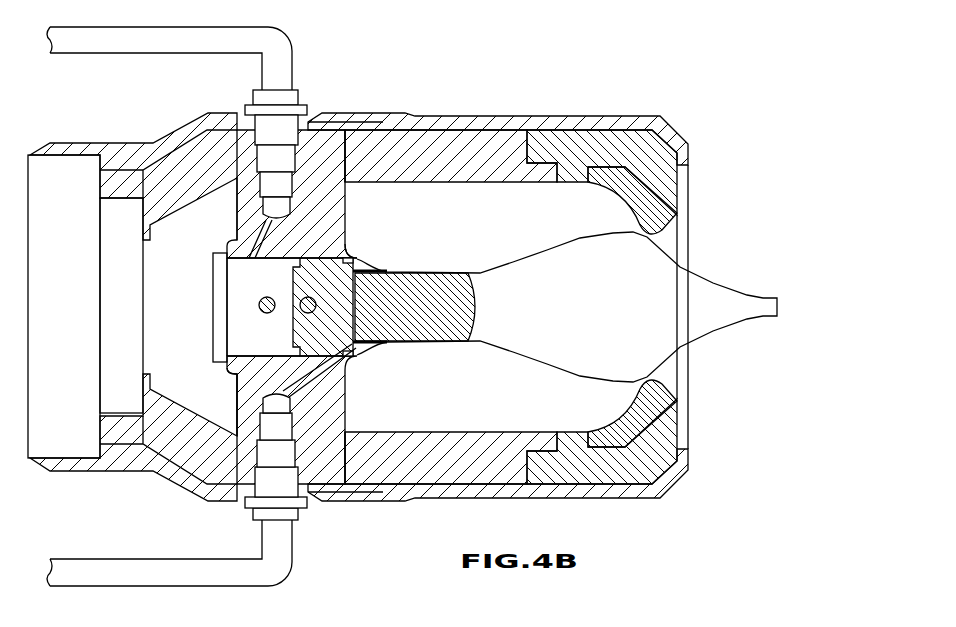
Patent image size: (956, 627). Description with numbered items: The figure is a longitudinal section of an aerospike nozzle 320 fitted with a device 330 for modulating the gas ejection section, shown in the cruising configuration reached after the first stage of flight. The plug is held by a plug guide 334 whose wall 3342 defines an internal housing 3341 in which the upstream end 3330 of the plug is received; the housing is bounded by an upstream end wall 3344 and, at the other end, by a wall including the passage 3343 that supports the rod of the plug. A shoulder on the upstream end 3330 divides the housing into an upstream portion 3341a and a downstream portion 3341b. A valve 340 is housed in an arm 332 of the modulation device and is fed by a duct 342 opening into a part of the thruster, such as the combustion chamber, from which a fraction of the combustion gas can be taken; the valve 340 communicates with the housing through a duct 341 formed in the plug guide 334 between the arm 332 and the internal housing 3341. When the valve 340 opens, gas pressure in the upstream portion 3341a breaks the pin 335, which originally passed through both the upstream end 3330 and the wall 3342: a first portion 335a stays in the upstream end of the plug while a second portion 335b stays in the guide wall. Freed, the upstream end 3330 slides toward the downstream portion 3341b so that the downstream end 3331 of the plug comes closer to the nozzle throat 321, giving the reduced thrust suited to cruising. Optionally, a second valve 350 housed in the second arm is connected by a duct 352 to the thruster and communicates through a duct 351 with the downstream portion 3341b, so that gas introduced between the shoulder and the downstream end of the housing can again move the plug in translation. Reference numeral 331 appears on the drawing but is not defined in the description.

The nozzle 320 is at (547, 98).
The nozzle throat 321 is at (663, 233).
The device for modulating the gas ejection section 330 is at (403, 252).
The second nozzle body 331 is at (327, 423).
The arm 332 is at (325, 187).
The plug guide 334 is at (372, 362).
The pin 335 is at (366, 272).
The first portion of the pin 335a is at (262, 343).
The second portion of the pin 335b is at (259, 300).
The upstream end of the plug 3330 is at (327, 270).
The downstream end of the plug 3331 is at (638, 314).
The internal housing 3341 is at (273, 278).
The upstream portion of the internal housing 3341a is at (258, 343).
The downstream portion of the internal housing 3341b is at (352, 256).
The wall of the plug guide 3342 is at (238, 390).
The passage 3343 is at (407, 340).
The upstream end wall of the internal housing 3344 is at (222, 318).
The valve 340 is at (276, 154).
The duct 341 is at (273, 240).
The duct 342 is at (147, 47).
The second valve 350 is at (276, 457).
The duct 351 is at (318, 373).
The duct 352 is at (147, 562).